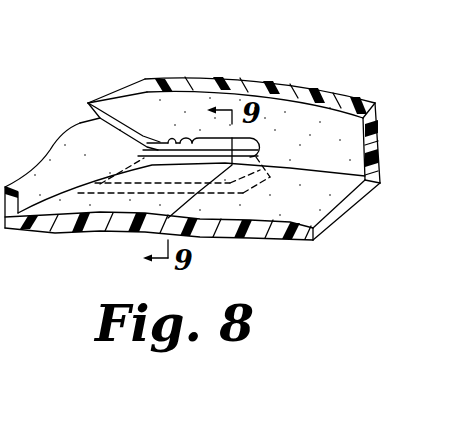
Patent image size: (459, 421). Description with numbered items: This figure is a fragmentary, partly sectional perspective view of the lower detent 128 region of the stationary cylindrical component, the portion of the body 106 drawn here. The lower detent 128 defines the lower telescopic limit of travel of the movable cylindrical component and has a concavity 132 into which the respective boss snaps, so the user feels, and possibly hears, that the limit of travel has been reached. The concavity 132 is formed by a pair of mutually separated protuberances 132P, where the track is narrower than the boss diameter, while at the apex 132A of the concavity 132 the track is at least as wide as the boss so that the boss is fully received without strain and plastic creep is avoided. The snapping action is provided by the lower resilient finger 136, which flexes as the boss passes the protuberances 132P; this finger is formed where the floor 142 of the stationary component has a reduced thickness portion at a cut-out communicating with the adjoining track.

The housing body / slab 106 is at (348, 95).
The lower detent 128 is at (168, 155).
The concavity 132 is at (169, 141).
The protuberances 132P is at (158, 141).
The apex of the concavity 132A is at (189, 141).
The lower resilient finger 136 is at (227, 150).
The floor 142 is at (298, 208).